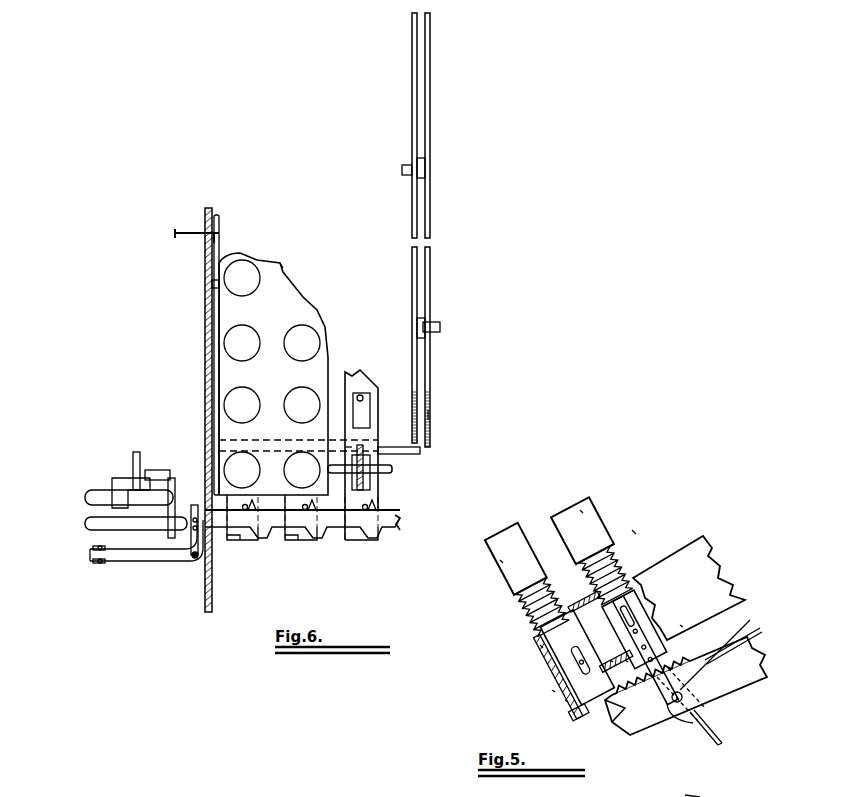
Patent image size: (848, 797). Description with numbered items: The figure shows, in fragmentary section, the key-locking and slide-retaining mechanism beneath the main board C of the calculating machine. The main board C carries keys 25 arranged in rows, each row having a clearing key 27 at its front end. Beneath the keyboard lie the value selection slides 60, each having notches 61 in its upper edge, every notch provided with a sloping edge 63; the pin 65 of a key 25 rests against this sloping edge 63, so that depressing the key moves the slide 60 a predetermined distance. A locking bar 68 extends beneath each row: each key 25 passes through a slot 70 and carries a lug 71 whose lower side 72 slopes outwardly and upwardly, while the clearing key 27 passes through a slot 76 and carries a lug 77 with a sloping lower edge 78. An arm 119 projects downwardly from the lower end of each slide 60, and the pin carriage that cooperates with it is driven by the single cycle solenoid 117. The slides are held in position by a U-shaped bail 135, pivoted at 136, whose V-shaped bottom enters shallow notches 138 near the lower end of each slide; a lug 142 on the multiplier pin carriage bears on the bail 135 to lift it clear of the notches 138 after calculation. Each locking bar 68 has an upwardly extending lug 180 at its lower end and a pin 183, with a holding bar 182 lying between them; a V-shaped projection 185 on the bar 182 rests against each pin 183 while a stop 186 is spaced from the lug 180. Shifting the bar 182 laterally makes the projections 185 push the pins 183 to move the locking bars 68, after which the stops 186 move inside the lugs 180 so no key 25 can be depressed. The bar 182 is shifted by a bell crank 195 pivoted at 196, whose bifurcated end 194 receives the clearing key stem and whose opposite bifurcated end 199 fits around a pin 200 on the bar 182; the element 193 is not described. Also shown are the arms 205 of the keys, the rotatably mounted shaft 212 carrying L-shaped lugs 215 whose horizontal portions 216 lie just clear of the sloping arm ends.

In FIG. 6, the key 25 is at (290, 333).
In FIG. 5, the key 25 is at (593, 551).
In FIG. 6, the clearing key 27 is at (243, 462).
In FIG. 5, the clearing key 27 is at (527, 580).
In FIG. 6, the value selection slide 60 is at (430, 75).
In FIG. 5, the value selection slide 60 is at (745, 688).
In FIG. 6, the notch 61 is at (412, 95).
In FIG. 5, the notch 61 is at (738, 646).
In FIG. 5, the sloping edge 63 is at (725, 660).
In FIG. 6, the pin 65 is at (402, 170).
In FIG. 5, the pin 65 is at (672, 712).
In FIG. 6, the locking bar 68 is at (350, 375).
In FIG. 5, the locking bar 68 is at (589, 648).
In FIG. 6, the slot 70 is at (360, 397).
In FIG. 5, the slot 70 is at (646, 650).
In FIG. 5, the lug 71 is at (634, 629).
In FIG. 5, the lower side 72 is at (683, 692).
In FIG. 6, the slot 76 is at (372, 445).
In FIG. 5, the slot 76 is at (578, 712).
In FIG. 6, the lug 77 is at (350, 450).
In FIG. 5, the lug 77 is at (557, 676).
In FIG. 5, the lower edge 78 is at (615, 661).
In FIG. 5, the single cycle solenoid 117 is at (686, 796).
In FIG. 5, the arm 119 is at (715, 730).
In FIG. 6, the U-shaped bail 135 is at (405, 453).
In FIG. 5, the U-shaped bail 135 is at (618, 706).
In FIG. 6, the pivot 136 is at (212, 285).
In FIG. 6, the notch 138 is at (430, 415).
In FIG. 5, the notch 138 is at (625, 730).
In FIG. 6, the lug 142 is at (178, 235).
In FIG. 6, the lug 180 is at (235, 545).
In FIG. 6, the holding bar 182 is at (400, 518).
In FIG. 6, the pin 183 is at (318, 545).
In FIG. 6, the V-shaped projection 185 is at (380, 510).
In FIG. 6, the stop 186 is at (395, 535).
In FIG. 6, the fitting 193 is at (95, 565).
In FIG. 6, the bifurcated end 194 is at (95, 553).
In FIG. 6, the bell crank 195 is at (135, 562).
In FIG. 6, the pivot 196 is at (195, 560).
In FIG. 6, the bifurcated end 199 is at (193, 520).
In FIG. 6, the pin 200 is at (197, 515).
In FIG. 6, the arm 205 is at (133, 460).
In FIG. 6, the shaft 212 is at (95, 522).
In FIG. 6, the L-shaped lug 215 is at (171, 478).
In FIG. 6, the horizontal portion 216 is at (152, 470).
In FIG. 6, the main board C is at (225, 372).
In FIG. 5, the main board C is at (640, 530).